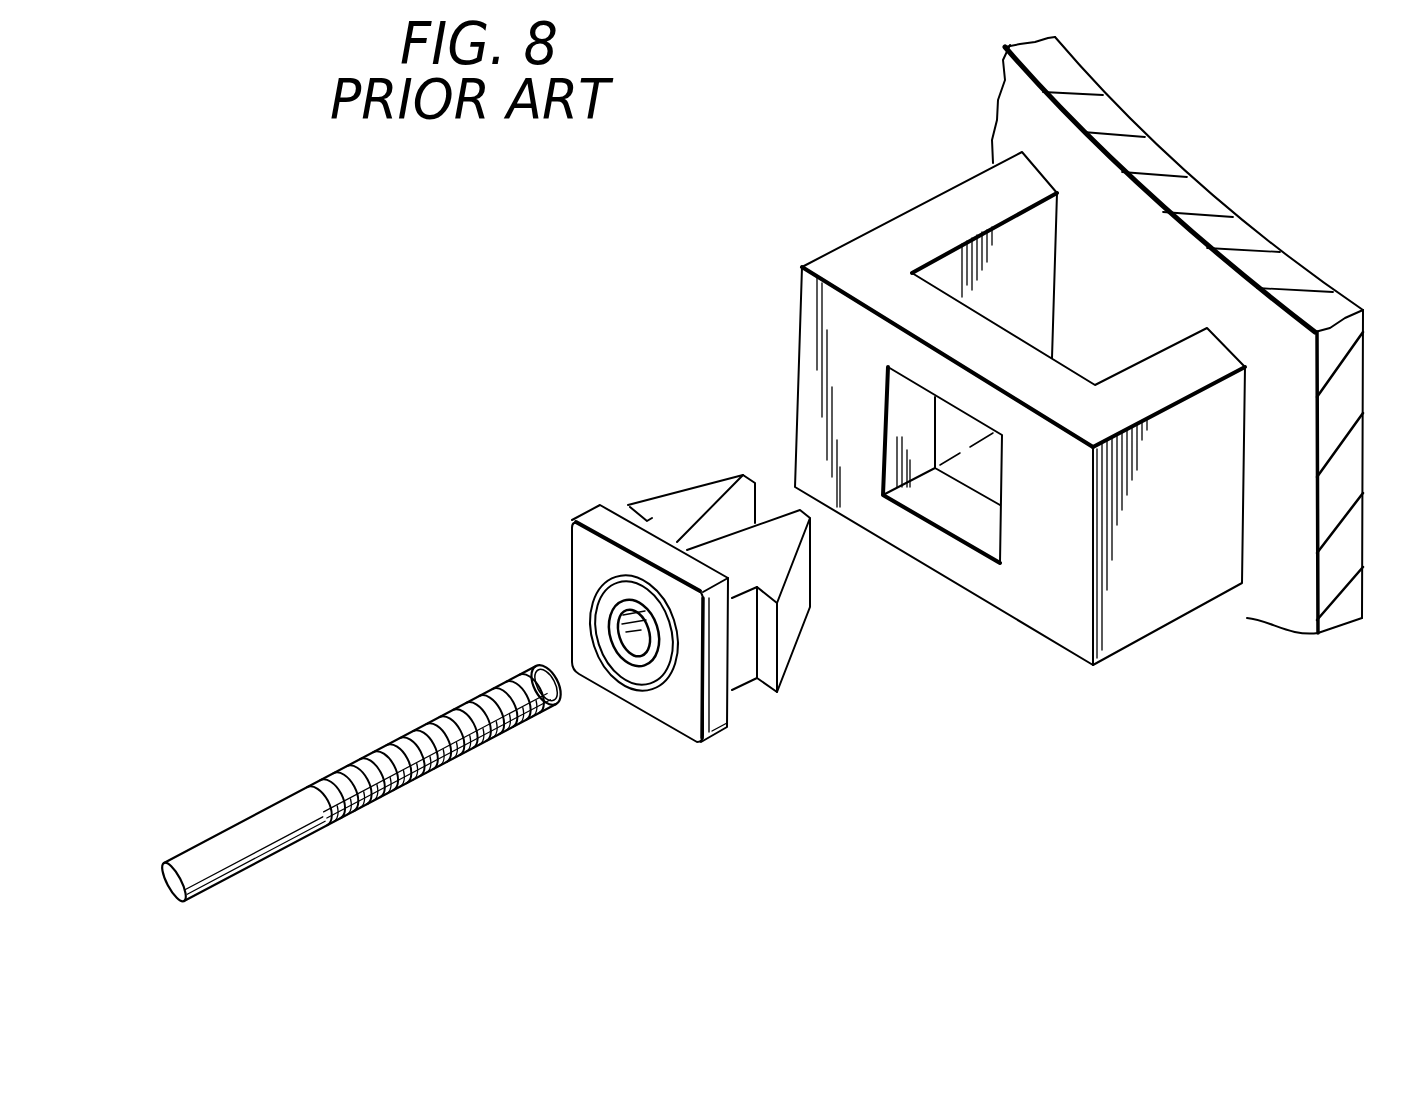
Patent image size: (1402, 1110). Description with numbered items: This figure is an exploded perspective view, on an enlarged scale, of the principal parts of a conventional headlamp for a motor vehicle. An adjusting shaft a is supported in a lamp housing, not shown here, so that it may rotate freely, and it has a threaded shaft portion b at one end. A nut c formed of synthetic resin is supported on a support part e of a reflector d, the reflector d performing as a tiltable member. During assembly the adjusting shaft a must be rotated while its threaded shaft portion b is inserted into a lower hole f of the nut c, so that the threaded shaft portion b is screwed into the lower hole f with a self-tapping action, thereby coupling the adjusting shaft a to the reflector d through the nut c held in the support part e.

The adjusting shaft a is at (283, 797).
The threaded shaft portion b is at (413, 735).
The nut c is at (590, 512).
The reflector d is at (1010, 108).
The support part e is at (812, 328).
The lower hole f is at (641, 638).